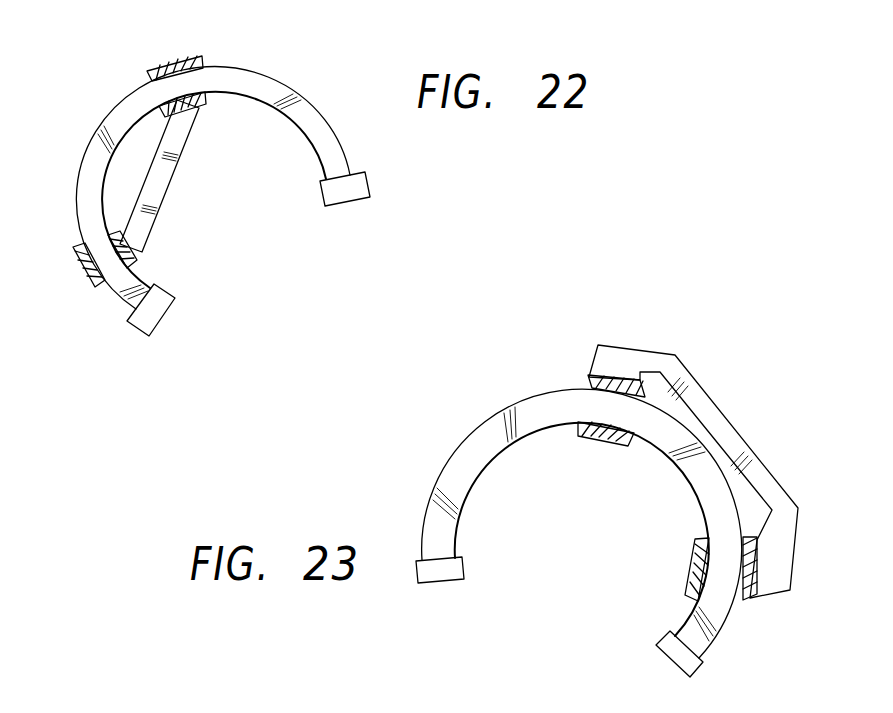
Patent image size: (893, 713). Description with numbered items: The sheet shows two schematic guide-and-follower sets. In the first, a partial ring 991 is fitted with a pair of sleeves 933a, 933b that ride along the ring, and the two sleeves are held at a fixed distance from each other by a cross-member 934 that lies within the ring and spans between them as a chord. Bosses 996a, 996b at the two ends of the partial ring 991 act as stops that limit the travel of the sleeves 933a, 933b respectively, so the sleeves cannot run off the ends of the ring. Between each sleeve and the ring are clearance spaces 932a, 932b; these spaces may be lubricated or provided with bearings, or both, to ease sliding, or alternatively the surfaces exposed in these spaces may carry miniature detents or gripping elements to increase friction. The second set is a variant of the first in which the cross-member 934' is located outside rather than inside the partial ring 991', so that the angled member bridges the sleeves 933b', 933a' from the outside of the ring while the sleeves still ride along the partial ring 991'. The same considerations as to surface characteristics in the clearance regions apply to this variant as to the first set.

In FIG. 22, the partial ring 991 is at (224, 181).
In FIG. 22, the boss 996a is at (352, 184).
In FIG. 22, the boss 996b is at (162, 300).
In FIG. 22, the sleeve 933a is at (214, 50).
In FIG. 22, the clearance space 932a is at (205, 96).
In FIG. 22, the sleeve 933b is at (57, 284).
In FIG. 22, the clearance space 932b is at (108, 283).
In FIG. 22, the cross-member 934 is at (184, 176).
In FIG. 23, the partial ring 991' is at (579, 533).
In FIG. 23, the cross-member 934' is at (693, 471).
In FIG. 23, the sleeve 933b' is at (562, 362).
In FIG. 23, the sleeve 933a' is at (638, 569).